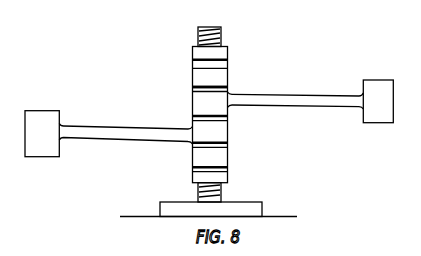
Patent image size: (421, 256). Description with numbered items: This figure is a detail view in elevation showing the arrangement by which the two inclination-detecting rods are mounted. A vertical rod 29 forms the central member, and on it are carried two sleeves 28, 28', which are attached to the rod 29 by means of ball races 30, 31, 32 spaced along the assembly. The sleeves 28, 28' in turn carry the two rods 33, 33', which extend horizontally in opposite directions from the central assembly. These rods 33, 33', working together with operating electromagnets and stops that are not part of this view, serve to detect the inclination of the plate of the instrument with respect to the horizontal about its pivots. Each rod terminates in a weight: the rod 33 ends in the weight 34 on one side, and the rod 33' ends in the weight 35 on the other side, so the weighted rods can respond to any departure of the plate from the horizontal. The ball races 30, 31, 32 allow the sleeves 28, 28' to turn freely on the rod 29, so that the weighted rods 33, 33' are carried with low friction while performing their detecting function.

The sleeve 28 is at (194, 115).
The sleeve 28' is at (229, 134).
The rod 29 is at (224, 35).
The ball race 30 is at (228, 90).
The ball race 31 is at (192, 116).
The ball race 32 is at (228, 146).
The rod 33 is at (296, 93).
The rod 33' is at (125, 143).
The weight 34 is at (378, 101).
The weight 35 is at (42, 134).